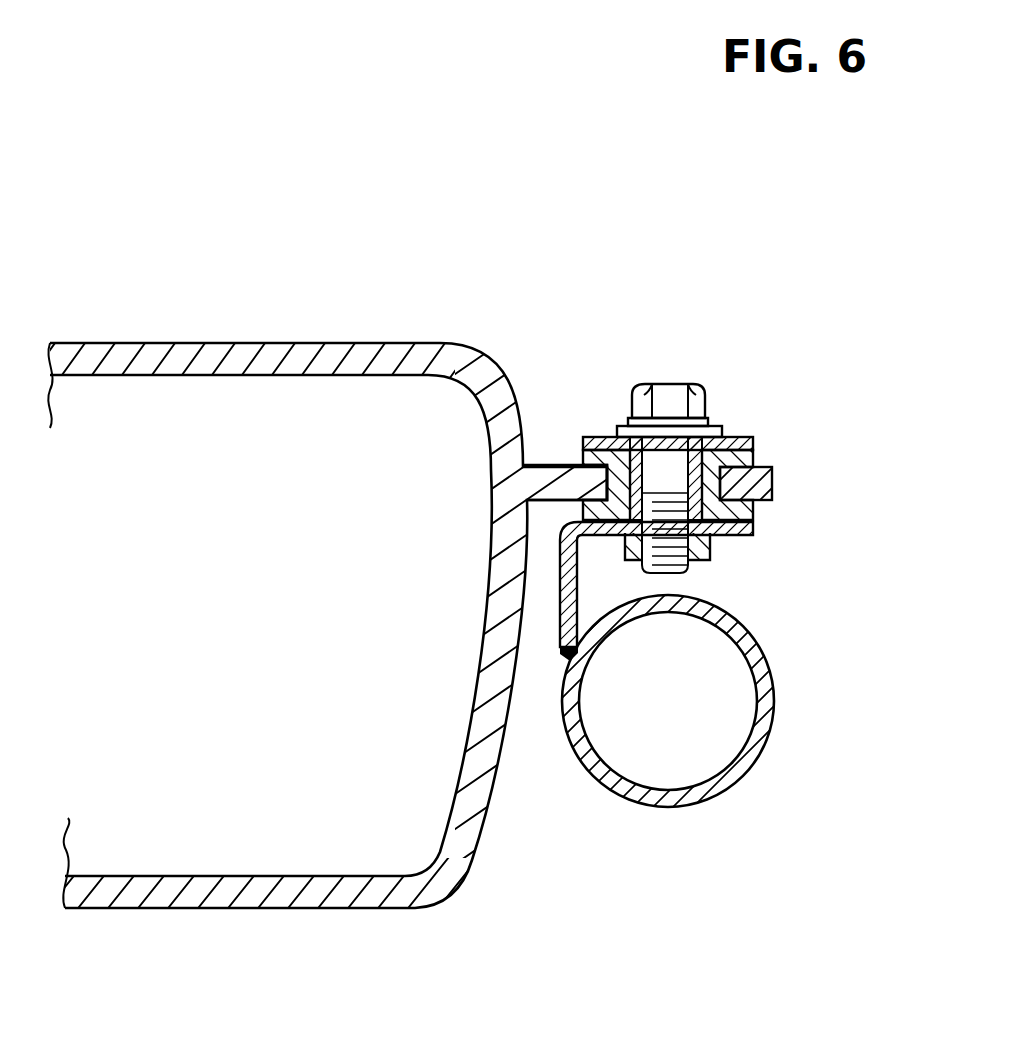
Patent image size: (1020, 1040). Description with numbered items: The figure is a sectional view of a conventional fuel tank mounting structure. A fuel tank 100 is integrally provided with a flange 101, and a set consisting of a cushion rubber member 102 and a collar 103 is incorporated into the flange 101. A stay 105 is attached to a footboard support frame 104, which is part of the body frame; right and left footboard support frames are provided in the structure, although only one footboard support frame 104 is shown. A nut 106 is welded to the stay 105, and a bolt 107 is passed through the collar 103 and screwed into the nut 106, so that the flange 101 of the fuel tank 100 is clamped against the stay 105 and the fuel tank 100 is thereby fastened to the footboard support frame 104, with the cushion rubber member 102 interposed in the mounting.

The fuel tank 100 is at (233, 343).
The flange 101 is at (561, 465).
The cushion rubber member 102 is at (762, 460).
The collar 103 is at (738, 444).
The footboard support frame 104 is at (775, 692).
The stay 105 is at (557, 598).
The nut 106 is at (710, 545).
The bolt 107 is at (657, 384).